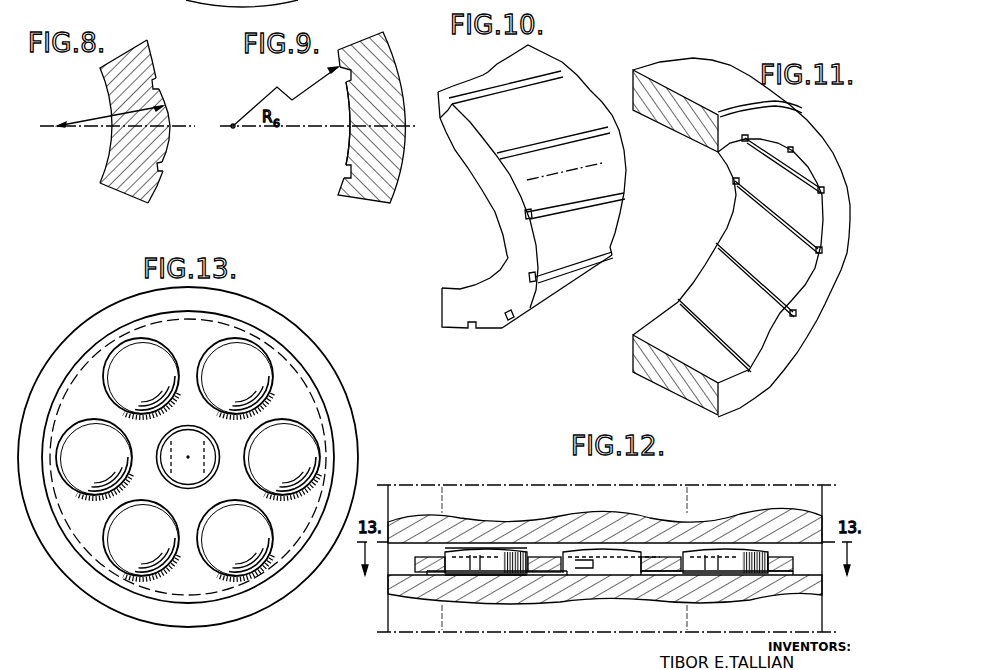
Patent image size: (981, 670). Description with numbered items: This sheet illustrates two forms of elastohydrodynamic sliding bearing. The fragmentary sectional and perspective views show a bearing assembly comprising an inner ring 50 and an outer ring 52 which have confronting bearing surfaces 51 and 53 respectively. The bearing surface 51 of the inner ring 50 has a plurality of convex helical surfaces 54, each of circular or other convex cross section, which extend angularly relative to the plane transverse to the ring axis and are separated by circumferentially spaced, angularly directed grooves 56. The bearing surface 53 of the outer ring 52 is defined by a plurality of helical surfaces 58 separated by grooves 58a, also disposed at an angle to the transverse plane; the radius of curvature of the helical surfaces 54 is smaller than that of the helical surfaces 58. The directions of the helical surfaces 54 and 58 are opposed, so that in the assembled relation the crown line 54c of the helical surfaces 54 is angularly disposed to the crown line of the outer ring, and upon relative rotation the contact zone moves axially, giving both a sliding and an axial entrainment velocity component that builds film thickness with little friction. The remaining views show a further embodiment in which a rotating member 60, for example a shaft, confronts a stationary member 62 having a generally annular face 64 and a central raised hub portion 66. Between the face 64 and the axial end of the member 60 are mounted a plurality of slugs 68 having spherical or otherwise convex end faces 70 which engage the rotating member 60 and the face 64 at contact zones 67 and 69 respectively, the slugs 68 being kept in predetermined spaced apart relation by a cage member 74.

In FIG. 8, the inner ring 50 is at (108, 75).
In FIG. 10, the inner ring 50 is at (495, 68).
In FIG. 10, the bearing surface of the inner ring 51 is at (539, 118).
In FIG. 9, the outer ring 52 is at (375, 40).
In FIG. 11, the outer ring 52 is at (672, 62).
In FIG. 11, the bearing surface of the outer ring 53 is at (724, 153).
In FIG. 8, the convex helical surfaces 54 is at (167, 150).
In FIG. 10, the convex helical surfaces 54 is at (573, 86).
In FIG. 8, the crown line of the helical surfaces 54c is at (169, 127).
In FIG. 10, the crown line of the helical surfaces 54c is at (571, 172).
In FIG. 8, the grooves 56 is at (155, 83).
In FIG. 10, the grooves 56 is at (500, 151).
In FIG. 9, the helical surfaces 58 is at (348, 146).
In FIG. 11, the helical surfaces 58 is at (739, 219).
In FIG. 9, the grooves 58a is at (322, 181).
In FIG. 11, the grooves 58a is at (840, 344).
In FIG. 12, the rotating member 60 is at (615, 510).
In FIG. 13, the stationary member 62 is at (162, 617).
In FIG. 12, the stationary member 62 is at (616, 629).
In FIG. 13, the annular face 64 is at (318, 365).
In FIG. 12, the annular face 64 is at (390, 574).
In FIG. 13, the central raised hub portion 66 is at (200, 444).
In FIG. 12, the central raised hub portion 66 is at (608, 560).
In FIG. 12, the contact zone 67 is at (487, 545).
In FIG. 13, the slugs 68 is at (149, 384).
In FIG. 12, the slugs 68 is at (472, 568).
In FIG. 12, the contact zone 69 is at (487, 578).
In FIG. 12, the convex end faces 70 is at (475, 547).
In FIG. 13, the cage member 74 is at (78, 547).
In FIG. 12, the cage member 74 is at (415, 559).